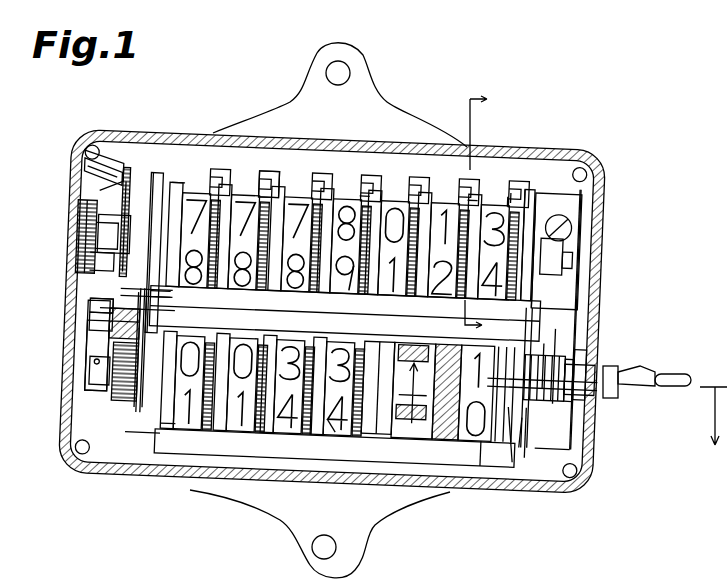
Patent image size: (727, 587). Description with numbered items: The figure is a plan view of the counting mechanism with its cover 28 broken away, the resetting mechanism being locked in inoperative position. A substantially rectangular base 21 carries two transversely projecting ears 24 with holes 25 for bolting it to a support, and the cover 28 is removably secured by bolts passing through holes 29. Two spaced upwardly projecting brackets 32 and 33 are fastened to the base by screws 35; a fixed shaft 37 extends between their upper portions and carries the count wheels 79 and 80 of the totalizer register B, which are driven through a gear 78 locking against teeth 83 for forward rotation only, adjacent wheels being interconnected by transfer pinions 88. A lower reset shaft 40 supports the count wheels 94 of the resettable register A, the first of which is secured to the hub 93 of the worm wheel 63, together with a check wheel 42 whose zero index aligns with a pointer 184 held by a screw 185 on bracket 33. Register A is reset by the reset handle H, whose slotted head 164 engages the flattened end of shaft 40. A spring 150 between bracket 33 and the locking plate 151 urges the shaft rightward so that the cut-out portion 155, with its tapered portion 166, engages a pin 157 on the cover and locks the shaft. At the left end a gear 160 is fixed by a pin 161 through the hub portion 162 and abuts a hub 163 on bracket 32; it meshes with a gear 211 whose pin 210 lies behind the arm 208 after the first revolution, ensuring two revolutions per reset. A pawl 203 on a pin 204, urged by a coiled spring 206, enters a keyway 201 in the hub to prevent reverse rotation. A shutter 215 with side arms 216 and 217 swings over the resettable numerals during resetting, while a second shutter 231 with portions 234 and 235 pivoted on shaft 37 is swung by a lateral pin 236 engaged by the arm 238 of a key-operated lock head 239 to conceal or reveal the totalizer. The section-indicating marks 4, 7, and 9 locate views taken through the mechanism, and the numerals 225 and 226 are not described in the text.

The base 21 is at (74, 425).
The ear 24 is at (362, 93).
The hole 25 is at (351, 72).
The cover 28 is at (599, 162).
The hole 29 is at (76, 451).
The bracket 32 is at (156, 176).
The bracket 33 is at (534, 190).
The screw 35 is at (568, 229).
The shaft 37 is at (567, 256).
The reset shaft 40 is at (547, 343).
The check wheel 42 is at (486, 442).
The worm wheel 63 is at (394, 414).
The gear 78 is at (522, 212).
The count wheel 79 is at (504, 192).
The count wheel 80 is at (353, 195).
The teeth 83 is at (210, 178).
The pinion 88 is at (266, 168).
The hub 93 is at (372, 392).
The count wheel 94 is at (332, 427).
The spring 150 is at (565, 325).
The locking plate 151 is at (586, 406).
The cut out portion 155 is at (597, 349).
The pin 157 is at (601, 368).
The gear 160 is at (114, 398).
The pin 161 is at (96, 362).
The hub portion 162 is at (92, 378).
The hub 163 is at (138, 410).
The head 164 is at (568, 394).
The tapered portion 166 is at (573, 398).
The pointer 184 is at (518, 456).
The screw 185 is at (533, 448).
The keyway 201 is at (90, 348).
The pawl 203 is at (92, 331).
The pin 204 is at (110, 321).
The coiled spring 206 is at (90, 301).
The arm 208 is at (88, 266).
The pin 210 is at (80, 160).
The gear 211 is at (120, 168).
The shutter 215 is at (334, 448).
The side arm 216 is at (135, 445).
The side arm 217 is at (528, 422).
The arm 225 is at (92, 178).
The rack 226 is at (128, 200).
The shutter 231 is at (344, 314).
The laterally extending portion 234 is at (172, 313).
The laterally extending portion 235 is at (535, 320).
The pin 236 is at (170, 294).
The arm 238 is at (80, 200).
The head 239 is at (72, 216).
The resettable register A is at (180, 422).
The totalizer register B is at (508, 187).
The reset handle H is at (676, 373).
The section line 4 is at (476, 437).
The section line 7 is at (620, 432).
The section line 9 is at (474, 213).